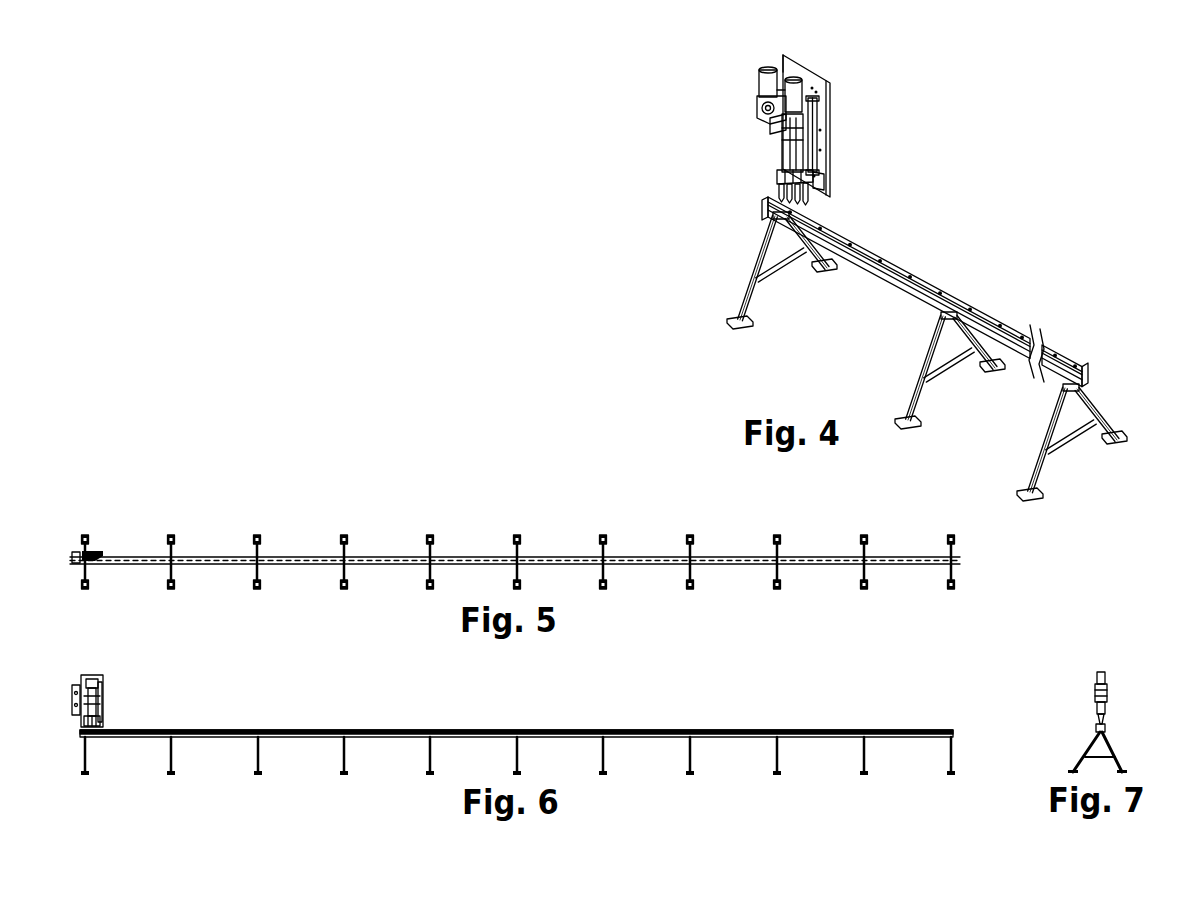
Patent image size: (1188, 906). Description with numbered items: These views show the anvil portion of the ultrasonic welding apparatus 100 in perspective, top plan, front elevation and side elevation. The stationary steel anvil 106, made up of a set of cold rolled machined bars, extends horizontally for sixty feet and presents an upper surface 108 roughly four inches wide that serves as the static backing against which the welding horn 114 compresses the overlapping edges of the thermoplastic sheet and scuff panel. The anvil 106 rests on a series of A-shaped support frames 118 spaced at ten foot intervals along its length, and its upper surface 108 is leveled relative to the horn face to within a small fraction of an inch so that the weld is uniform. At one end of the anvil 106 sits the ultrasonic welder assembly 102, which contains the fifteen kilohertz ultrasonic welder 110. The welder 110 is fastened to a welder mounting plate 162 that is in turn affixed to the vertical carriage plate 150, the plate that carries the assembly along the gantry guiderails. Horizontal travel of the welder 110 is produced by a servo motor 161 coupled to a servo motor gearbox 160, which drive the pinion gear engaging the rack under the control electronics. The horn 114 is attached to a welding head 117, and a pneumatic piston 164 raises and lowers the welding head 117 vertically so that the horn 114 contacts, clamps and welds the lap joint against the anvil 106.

In FIG. 4, the ultrasonic welding apparatus 100 is at (888, 168).
In FIG. 4, the ultrasonic welder assembly 102 is at (857, 84).
In FIG. 5, the ultrasonic welder assembly 102 is at (106, 536).
In FIG. 6, the ultrasonic welder assembly 102 is at (116, 708).
In FIG. 7, the ultrasonic welder assembly 102 is at (1083, 674).
In FIG. 4, the anvil 106 is at (914, 262).
In FIG. 6, the anvil 106 is at (238, 729).
In FIG. 7, the anvil 106 is at (1095, 725).
In FIG. 4, the upper surface 108 is at (985, 316).
In FIG. 6, the upper surface 108 is at (374, 729).
In FIG. 4, the ultrasonic welder 110 is at (748, 90).
In FIG. 6, the ultrasonic welder 110 is at (112, 691).
In FIG. 7, the ultrasonic welder 110 is at (1080, 697).
In FIG. 4, the welding horn 114 is at (778, 185).
In FIG. 4, the welding head 117 is at (782, 177).
In FIG. 4, the A-shaped support frames 118 is at (920, 364).
In FIG. 5, the A-shaped support frames 118 is at (345, 578).
In FIG. 6, the A-shaped support frames 118 is at (431, 750).
In FIG. 7, the A-shaped support frames 118 is at (1093, 740).
In FIG. 4, the carriage plate 150 is at (790, 56).
In FIG. 4, the servo motor gearbox 160 is at (758, 109).
In FIG. 4, the servo motor 161 is at (763, 75).
In FIG. 4, the welder mounting plate 162 is at (822, 184).
In FIG. 6, the welder mounting plate 162 is at (93, 676).
In FIG. 4, the pneumatic piston 164 is at (813, 93).